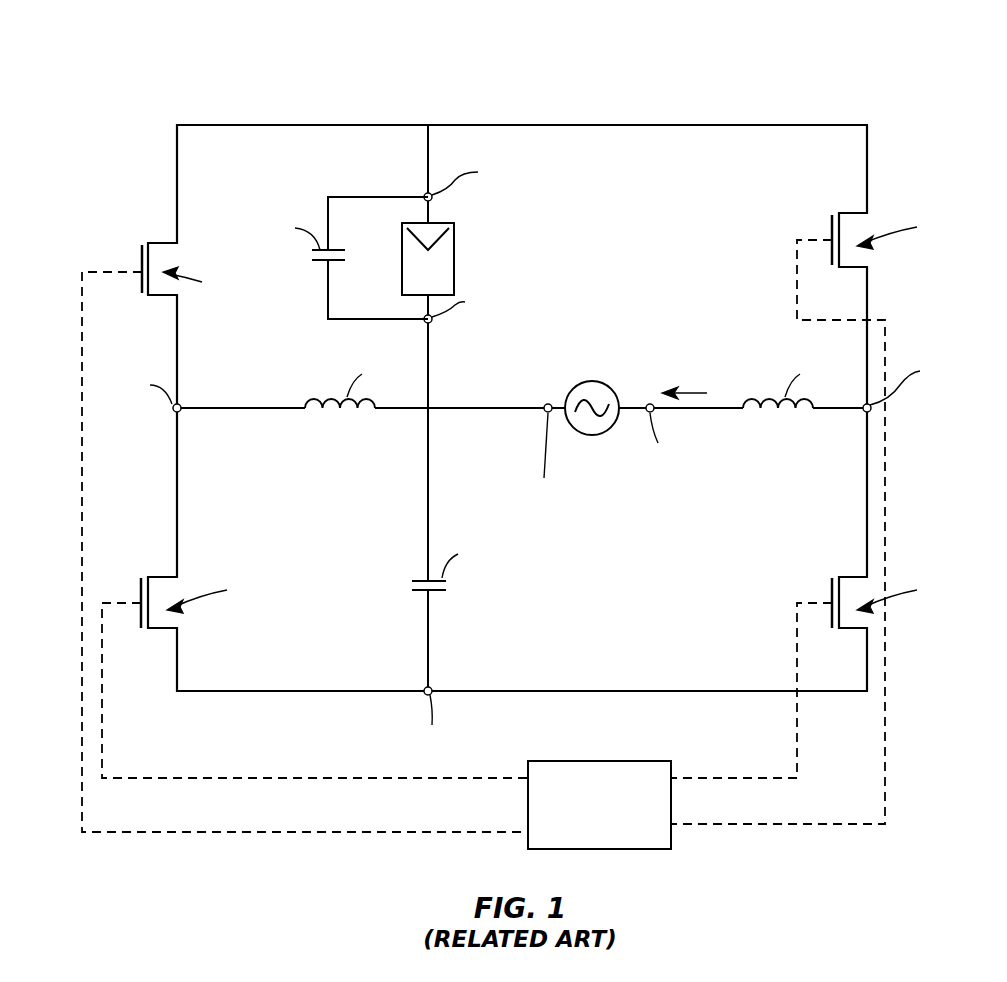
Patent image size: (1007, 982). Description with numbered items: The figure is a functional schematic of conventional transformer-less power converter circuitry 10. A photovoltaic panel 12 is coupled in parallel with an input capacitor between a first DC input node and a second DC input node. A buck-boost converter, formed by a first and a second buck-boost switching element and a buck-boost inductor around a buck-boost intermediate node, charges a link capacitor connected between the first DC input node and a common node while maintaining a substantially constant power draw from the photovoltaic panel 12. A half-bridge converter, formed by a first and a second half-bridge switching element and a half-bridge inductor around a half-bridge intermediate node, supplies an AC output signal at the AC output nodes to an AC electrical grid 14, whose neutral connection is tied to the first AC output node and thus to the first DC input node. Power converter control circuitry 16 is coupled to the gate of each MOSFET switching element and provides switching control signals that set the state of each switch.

The transformer-less power converter circuitry 10 is at (525, 443).
The photovoltaic panel 12 is at (454, 258).
The AC electrical grid 14 is at (597, 435).
The power converter control circuitry 16 is at (599, 805).